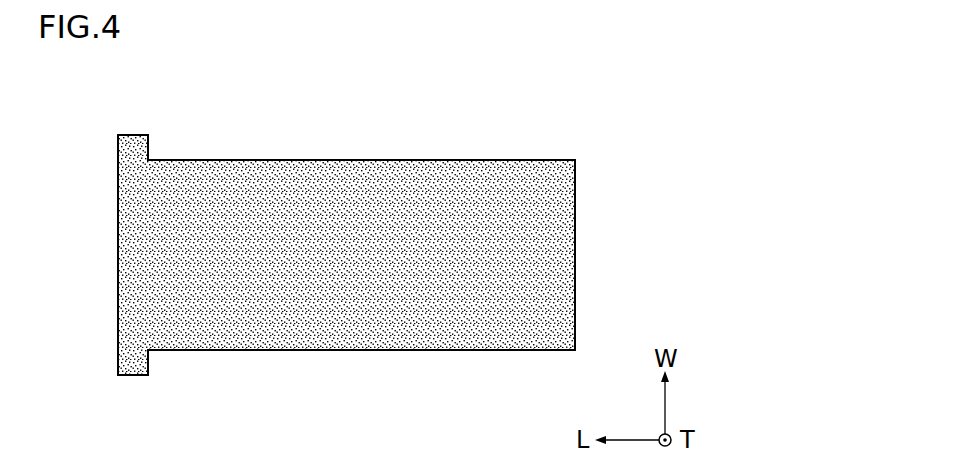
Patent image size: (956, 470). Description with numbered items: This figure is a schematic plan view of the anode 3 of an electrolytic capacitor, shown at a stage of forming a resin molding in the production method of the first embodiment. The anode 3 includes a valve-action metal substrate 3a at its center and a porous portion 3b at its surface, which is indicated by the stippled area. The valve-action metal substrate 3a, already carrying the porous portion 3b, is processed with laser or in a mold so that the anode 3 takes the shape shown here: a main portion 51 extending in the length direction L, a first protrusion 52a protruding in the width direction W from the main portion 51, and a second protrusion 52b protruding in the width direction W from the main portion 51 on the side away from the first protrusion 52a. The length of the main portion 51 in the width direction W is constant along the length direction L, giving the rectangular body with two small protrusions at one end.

The anode 3 is at (584, 148).
The main portion 51 is at (312, 186).
The first protrusion 52a is at (118, 362).
The second protrusion 52b is at (118, 147).
The valve-action metal substrate 3a is at (267, 318).
The porous portion 3b is at (348, 320).